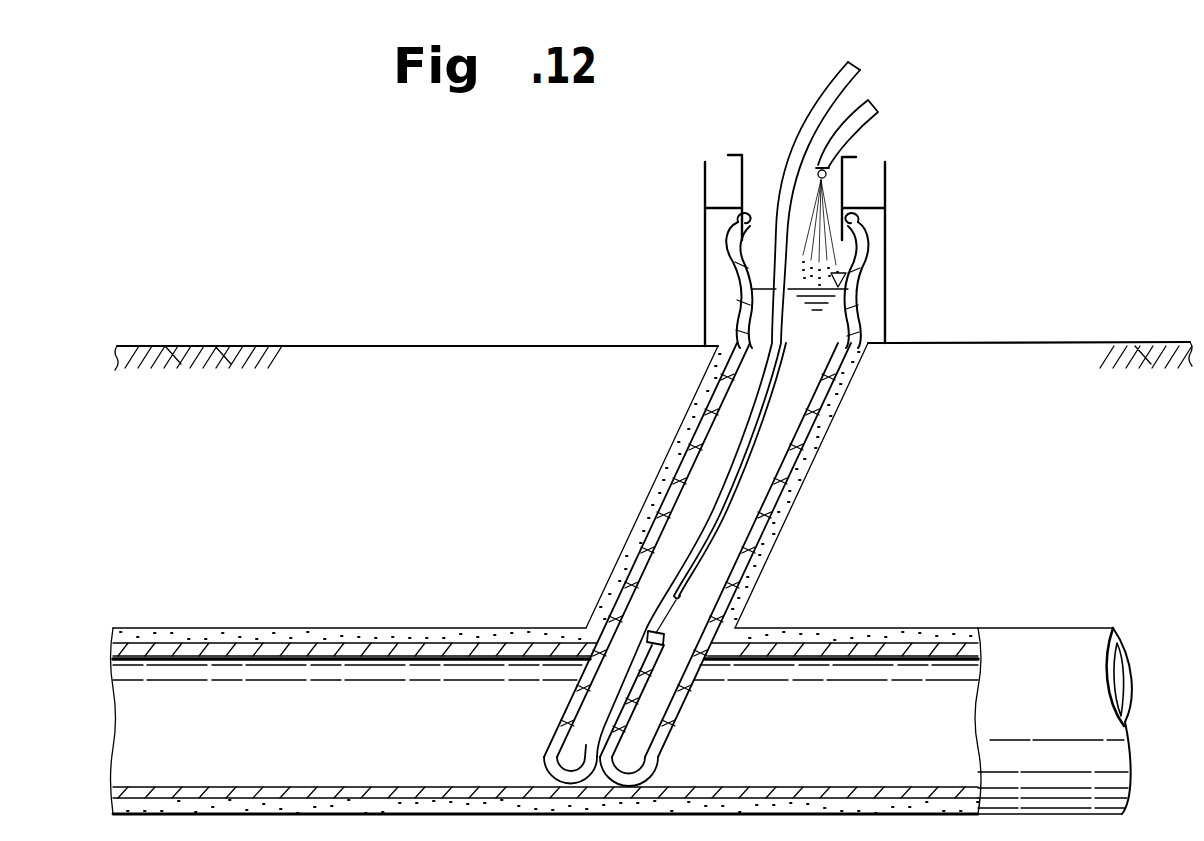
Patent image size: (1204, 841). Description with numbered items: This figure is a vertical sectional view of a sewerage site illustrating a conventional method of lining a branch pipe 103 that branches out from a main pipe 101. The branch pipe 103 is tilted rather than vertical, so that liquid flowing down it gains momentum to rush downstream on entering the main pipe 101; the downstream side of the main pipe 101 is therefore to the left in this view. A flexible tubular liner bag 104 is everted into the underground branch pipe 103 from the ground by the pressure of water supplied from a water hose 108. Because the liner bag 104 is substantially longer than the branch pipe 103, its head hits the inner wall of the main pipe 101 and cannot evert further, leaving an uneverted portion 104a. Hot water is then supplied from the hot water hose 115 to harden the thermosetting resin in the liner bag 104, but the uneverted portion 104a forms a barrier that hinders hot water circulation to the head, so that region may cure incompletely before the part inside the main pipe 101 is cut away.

The main pipe 101 is at (918, 627).
The branch pipe 103 is at (798, 498).
The flexible tubular liner bag 104 is at (560, 722).
The uneverted portion 104a is at (634, 708).
The water hose 108 is at (858, 120).
The hot water hose 115 is at (797, 122).